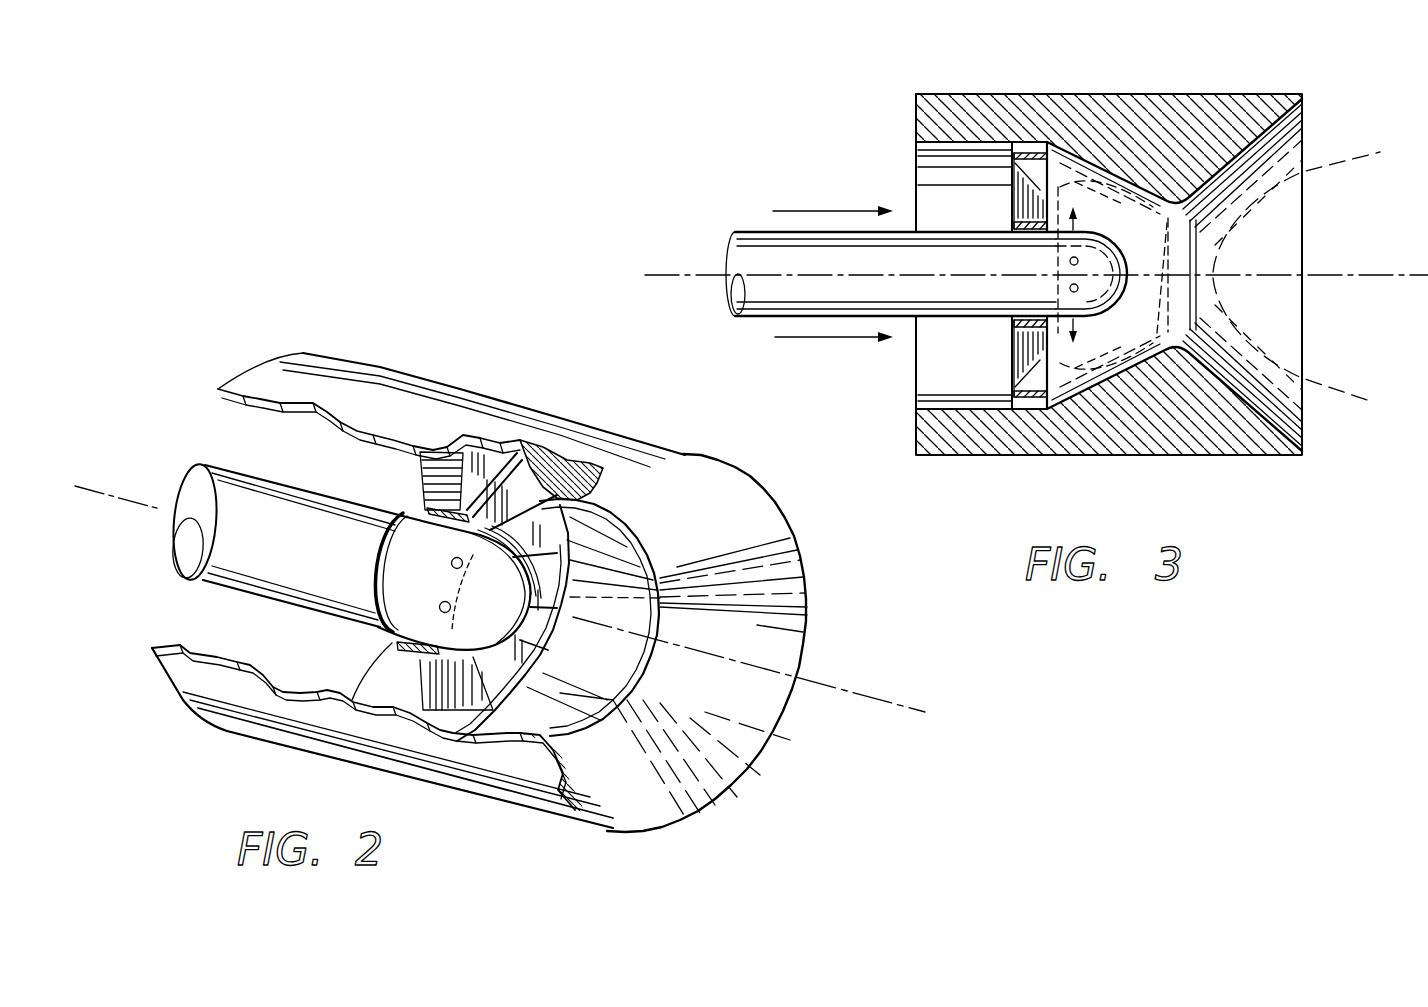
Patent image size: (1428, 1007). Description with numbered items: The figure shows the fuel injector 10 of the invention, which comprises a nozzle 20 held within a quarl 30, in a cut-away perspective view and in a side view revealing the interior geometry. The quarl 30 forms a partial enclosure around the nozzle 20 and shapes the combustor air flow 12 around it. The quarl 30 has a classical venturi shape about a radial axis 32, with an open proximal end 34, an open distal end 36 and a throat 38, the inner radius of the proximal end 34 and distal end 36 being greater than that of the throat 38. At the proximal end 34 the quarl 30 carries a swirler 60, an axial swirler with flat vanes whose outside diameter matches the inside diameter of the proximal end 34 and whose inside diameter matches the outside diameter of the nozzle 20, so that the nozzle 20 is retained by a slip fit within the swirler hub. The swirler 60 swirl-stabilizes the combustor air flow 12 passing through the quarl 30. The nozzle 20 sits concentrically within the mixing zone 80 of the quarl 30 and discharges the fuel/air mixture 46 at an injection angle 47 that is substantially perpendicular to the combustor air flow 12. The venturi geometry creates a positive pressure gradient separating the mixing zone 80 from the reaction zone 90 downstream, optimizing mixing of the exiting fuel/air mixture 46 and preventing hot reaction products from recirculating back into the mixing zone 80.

In FIG. 2, the fuel injector 10 is at (440, 308).
In FIG. 3, the combustor air flow 12 is at (810, 208).
In FIG. 2, the nozzle 20 is at (423, 577).
In FIG. 2, the quarl 30 is at (473, 793).
In FIG. 3, the radial axis 32 is at (1337, 273).
In FIG. 3, the open proximal end 34 is at (1015, 125).
In FIG. 3, the open distal end 36 is at (1305, 418).
In FIG. 3, the throat 38 is at (1177, 203).
In FIG. 3, the fuel/air mixture 46 is at (1045, 378).
In FIG. 3, the injection angle 47 is at (1080, 312).
In FIG. 3, the swirler 60 is at (1033, 180).
In FIG. 2, the swirler 60 is at (517, 480).
In FIG. 3, the mixing zone 80 is at (1077, 372).
In FIG. 3, the reaction zone 90 is at (1363, 397).